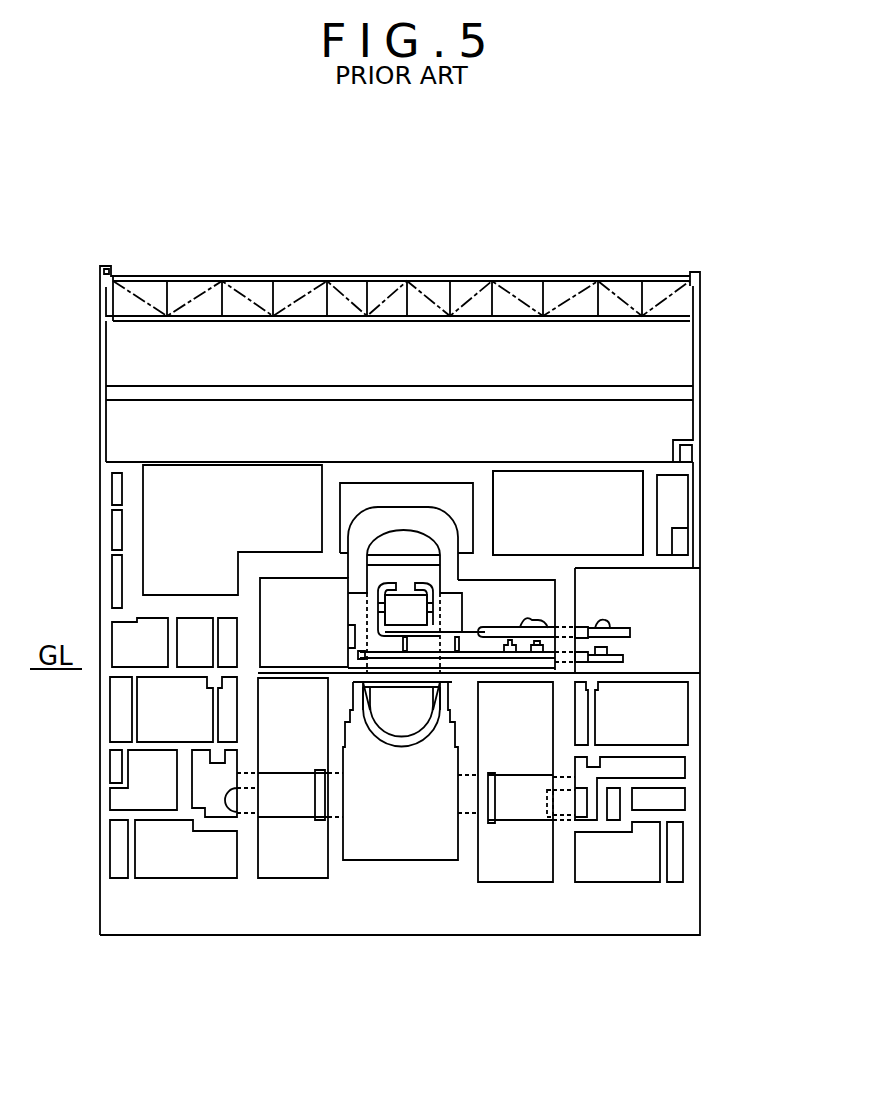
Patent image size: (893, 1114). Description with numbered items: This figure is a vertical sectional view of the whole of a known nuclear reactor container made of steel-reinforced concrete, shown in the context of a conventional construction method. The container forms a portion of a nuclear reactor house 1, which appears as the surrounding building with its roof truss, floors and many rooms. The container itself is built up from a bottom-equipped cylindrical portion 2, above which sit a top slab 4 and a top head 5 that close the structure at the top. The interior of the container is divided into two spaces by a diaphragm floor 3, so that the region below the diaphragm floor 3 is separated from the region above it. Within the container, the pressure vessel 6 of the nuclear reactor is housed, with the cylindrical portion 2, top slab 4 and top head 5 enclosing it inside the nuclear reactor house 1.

The nuclear reactor house 1 is at (715, 487).
The bottom-equipped cylindrical portion 2 is at (565, 600).
The diaphragm floor 3 is at (513, 682).
The top slab 4 is at (528, 562).
The top head 5 is at (422, 505).
The pressure vessel 6 is at (422, 547).